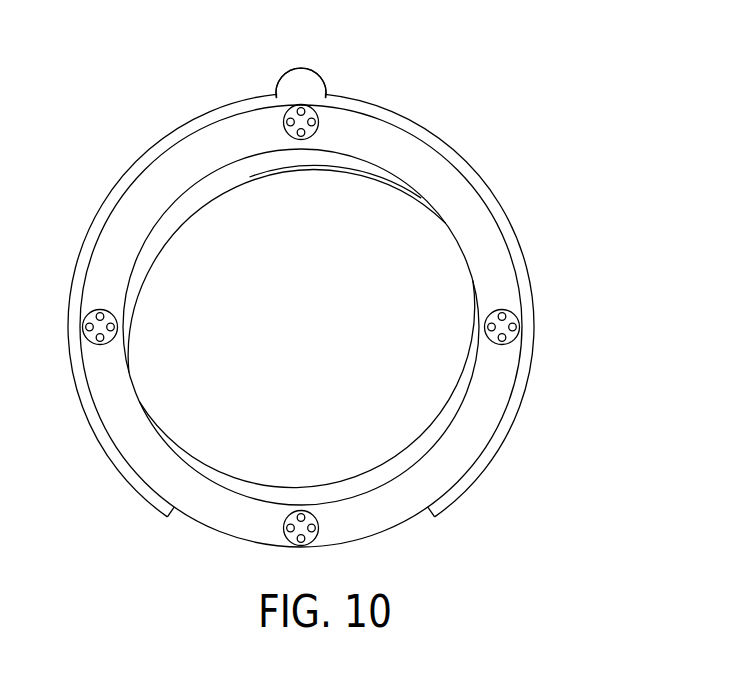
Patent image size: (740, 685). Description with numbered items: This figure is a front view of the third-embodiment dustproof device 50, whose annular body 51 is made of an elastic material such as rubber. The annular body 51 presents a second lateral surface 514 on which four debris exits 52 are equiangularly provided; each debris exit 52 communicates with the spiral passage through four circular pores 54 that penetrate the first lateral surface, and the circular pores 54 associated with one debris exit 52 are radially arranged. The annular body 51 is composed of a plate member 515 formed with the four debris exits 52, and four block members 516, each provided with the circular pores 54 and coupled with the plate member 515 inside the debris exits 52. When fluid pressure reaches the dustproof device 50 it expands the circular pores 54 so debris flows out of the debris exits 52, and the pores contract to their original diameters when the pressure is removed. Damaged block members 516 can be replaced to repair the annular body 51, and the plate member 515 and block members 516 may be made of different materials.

The dustproof device 50 is at (521, 160).
The annular body 51 is at (357, 26).
The debris exit 52 is at (287, 128).
The circular pore 54 is at (300, 117).
The second lateral surface 514 is at (498, 268).
The plate member 515 is at (398, 150).
The block member 516 is at (357, 97).